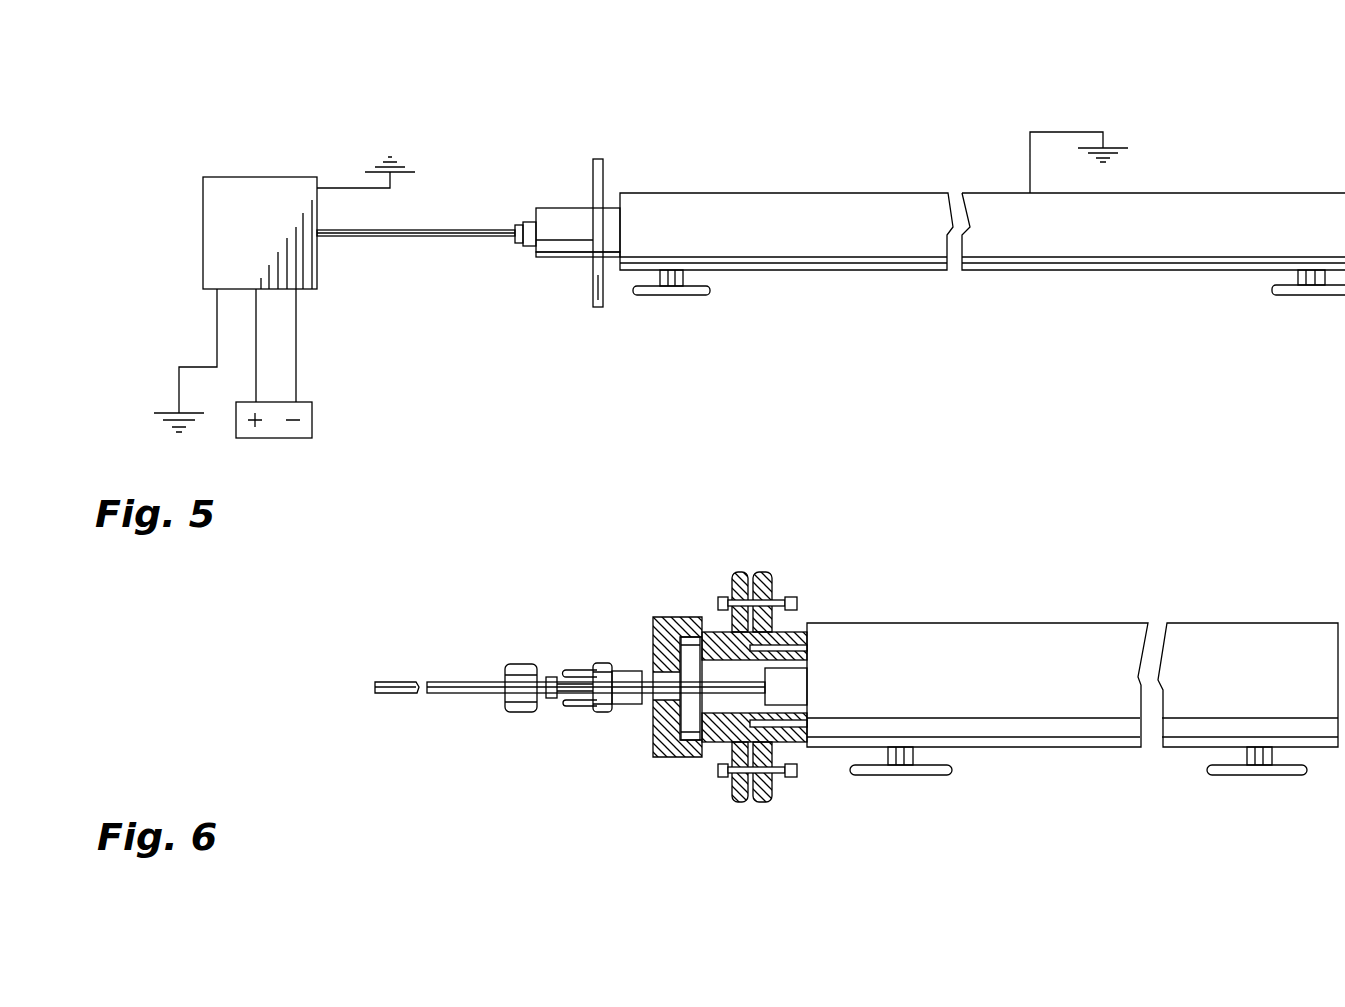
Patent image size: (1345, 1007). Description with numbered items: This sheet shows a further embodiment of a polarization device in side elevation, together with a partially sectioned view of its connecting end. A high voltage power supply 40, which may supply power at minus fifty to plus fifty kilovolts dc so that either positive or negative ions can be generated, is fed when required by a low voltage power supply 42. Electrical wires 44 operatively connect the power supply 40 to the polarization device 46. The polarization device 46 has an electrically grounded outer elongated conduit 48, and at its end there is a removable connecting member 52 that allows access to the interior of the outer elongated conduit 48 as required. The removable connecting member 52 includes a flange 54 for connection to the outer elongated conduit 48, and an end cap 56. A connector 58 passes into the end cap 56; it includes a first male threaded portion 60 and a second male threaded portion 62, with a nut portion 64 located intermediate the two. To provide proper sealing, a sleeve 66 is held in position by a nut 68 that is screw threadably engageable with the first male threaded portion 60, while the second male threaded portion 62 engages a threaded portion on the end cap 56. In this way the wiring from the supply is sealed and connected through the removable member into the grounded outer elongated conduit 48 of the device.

In FIG. 5, the high voltage power supply 40 is at (203, 225).
In FIG. 5, the low voltage power supply 42 is at (250, 439).
In FIG. 5, the electrical wires 44 is at (435, 230).
In FIG. 5, the removable connecting member 52 is at (557, 212).
In FIG. 6, the polarization device 46 is at (516, 549).
In FIG. 6, the outer elongated conduit 48 is at (828, 623).
In FIG. 6, the flange 54 is at (772, 572).
In FIG. 6, the end cap 56 is at (665, 617).
In FIG. 6, the connector 58 is at (596, 645).
In FIG. 6, the first male threaded portion 60 is at (573, 706).
In FIG. 6, the second male threaded portion 62 is at (629, 668).
In FIG. 6, the nut portion 64 is at (597, 712).
In FIG. 6, the sleeve 66 is at (548, 699).
In FIG. 6, the nut 68 is at (517, 708).